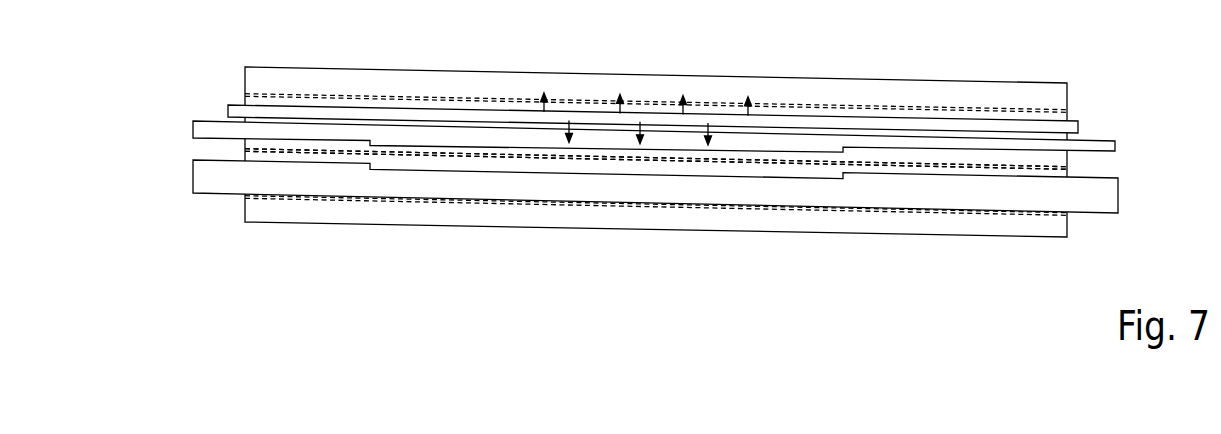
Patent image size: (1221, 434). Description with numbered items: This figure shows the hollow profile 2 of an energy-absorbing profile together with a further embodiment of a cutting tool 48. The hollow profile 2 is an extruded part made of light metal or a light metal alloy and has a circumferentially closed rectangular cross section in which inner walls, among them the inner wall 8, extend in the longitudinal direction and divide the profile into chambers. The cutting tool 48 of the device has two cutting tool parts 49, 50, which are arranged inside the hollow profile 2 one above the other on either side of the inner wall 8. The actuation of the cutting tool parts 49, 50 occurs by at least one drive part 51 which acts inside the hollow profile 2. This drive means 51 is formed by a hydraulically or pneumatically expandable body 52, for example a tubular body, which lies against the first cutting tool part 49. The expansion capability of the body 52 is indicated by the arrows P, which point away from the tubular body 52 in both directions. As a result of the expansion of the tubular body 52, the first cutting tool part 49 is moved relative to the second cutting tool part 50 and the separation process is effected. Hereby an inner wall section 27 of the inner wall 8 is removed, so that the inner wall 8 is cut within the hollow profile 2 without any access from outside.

The hollow profile 2 is at (872, 66).
The inner wall 8 is at (915, 167).
The inner wall section 27 is at (585, 170).
The cutting tool 48 is at (590, 169).
The first cutting tool part 49 is at (318, 133).
The cutting tool part 50 is at (312, 183).
The drive part 51 is at (1087, 102).
The expandable body 52 is at (900, 117).
The arrows P is at (696, 107).